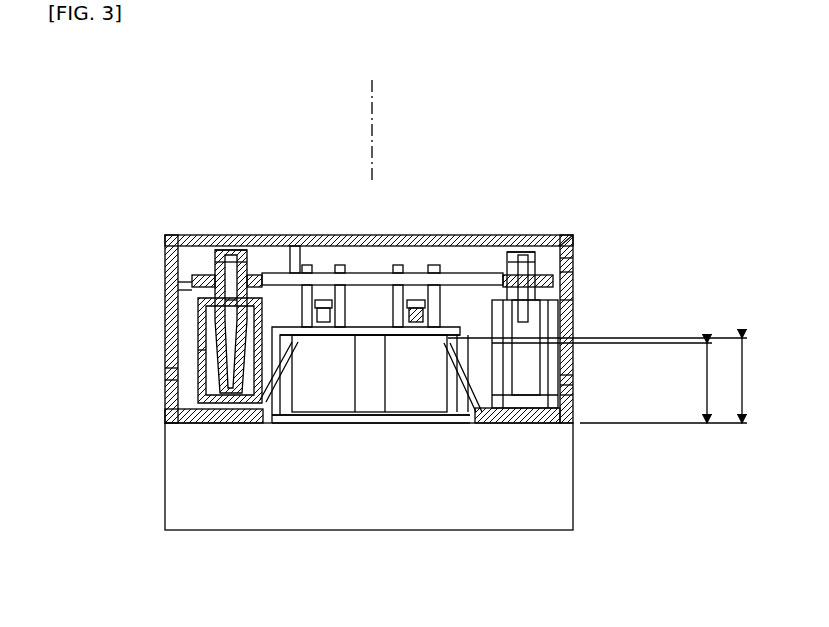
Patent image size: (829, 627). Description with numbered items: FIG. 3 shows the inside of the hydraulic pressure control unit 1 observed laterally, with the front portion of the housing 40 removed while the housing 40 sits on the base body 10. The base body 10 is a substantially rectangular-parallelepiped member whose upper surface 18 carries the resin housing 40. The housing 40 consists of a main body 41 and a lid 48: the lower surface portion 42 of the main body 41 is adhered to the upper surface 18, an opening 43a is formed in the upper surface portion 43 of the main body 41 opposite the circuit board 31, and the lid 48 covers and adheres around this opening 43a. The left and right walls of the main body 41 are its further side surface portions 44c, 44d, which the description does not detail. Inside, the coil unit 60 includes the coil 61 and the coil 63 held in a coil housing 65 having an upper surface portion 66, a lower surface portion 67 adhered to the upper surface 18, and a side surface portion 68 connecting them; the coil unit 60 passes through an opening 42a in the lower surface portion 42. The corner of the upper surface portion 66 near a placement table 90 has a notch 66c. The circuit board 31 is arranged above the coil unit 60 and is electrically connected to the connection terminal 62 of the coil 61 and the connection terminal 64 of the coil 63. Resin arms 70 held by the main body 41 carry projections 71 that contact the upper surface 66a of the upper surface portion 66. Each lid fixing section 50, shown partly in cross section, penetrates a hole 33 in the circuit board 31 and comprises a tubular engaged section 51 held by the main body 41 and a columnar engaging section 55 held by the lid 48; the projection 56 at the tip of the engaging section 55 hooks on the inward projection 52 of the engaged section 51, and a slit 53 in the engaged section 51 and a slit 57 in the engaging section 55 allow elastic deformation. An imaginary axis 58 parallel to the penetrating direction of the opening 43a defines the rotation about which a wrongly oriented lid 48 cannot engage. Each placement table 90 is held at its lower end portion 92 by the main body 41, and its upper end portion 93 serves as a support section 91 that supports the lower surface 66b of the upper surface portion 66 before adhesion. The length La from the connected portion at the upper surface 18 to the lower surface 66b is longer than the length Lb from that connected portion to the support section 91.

The hydraulic pressure control unit 1 is at (565, 135).
The base body 10 is at (427, 530).
The upper surface 18 is at (575, 395).
The circuit board 31 is at (165, 270).
The hole 33 is at (287, 275).
The housing 40 is at (160, 233).
The main body 41 is at (577, 318).
The lower surface portion 42 is at (522, 395).
The opening 42a is at (478, 400).
The upper surface portion 43 is at (577, 272).
The opening 43a is at (577, 258).
The left wall portion 44c is at (165, 380).
The right wall portion 44d is at (577, 385).
The lid 48 is at (577, 242).
The lid fixing section 50 is at (200, 258).
The engaged section 51 is at (215, 410).
The projection 52 is at (165, 310).
The slit 53 is at (190, 408).
The engaging section 55 is at (222, 255).
The projection 56 is at (165, 348).
The slit 57 is at (250, 262).
The imaginary axis 58 is at (382, 116).
The coil unit 60 is at (353, 432).
The coil 61 is at (280, 415).
The connection terminal 62 is at (295, 240).
The coil 63 is at (425, 345).
The connection terminal 64 is at (414, 300).
The coil housing 65 is at (330, 300).
The upper surface portion 66 is at (352, 327).
The upper surface 66a is at (382, 320).
The lower surface 66b is at (400, 400).
The notch 66c is at (573, 340).
The lower surface portion 67 is at (338, 420).
The side surface portion 68 is at (262, 415).
The arm 70 is at (307, 268).
The projection 71 is at (305, 400).
The placement table 90 is at (165, 368).
The support section 91 is at (470, 330).
The lower end portion 92 is at (505, 400).
The upper end portion 93 is at (480, 340).
The length La is at (730, 380).
The length Lb is at (619, 383).